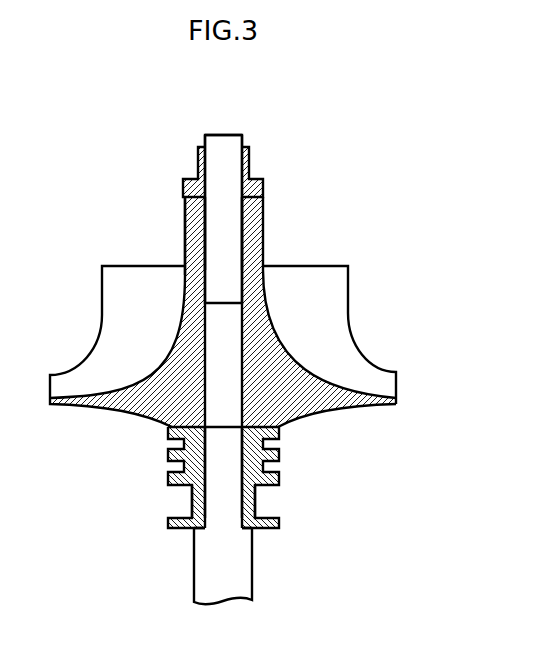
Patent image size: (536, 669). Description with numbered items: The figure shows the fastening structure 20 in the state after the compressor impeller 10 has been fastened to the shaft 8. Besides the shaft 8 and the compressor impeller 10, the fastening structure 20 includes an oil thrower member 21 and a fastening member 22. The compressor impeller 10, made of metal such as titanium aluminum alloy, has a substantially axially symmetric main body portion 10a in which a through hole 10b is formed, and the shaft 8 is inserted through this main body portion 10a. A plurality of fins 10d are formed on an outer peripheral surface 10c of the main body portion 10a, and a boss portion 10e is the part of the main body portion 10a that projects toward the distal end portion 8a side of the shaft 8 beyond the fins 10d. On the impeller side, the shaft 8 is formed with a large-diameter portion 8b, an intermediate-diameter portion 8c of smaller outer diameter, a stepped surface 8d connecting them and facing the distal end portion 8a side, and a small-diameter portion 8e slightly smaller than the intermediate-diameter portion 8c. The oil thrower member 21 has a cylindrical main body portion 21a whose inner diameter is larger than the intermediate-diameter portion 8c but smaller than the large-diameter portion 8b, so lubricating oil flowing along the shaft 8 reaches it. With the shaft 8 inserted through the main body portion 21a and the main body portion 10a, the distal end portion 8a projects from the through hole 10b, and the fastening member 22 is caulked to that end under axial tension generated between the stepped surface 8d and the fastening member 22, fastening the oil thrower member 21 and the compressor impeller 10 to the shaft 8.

The fastening structure 20 is at (23, 127).
The compressor impeller 10 is at (45, 302).
The main body portion 10a is at (316, 378).
The through hole 10b is at (200, 240).
The outer peripheral surface 10c is at (310, 372).
The fins 10d is at (350, 310).
The boss portion 10e is at (265, 255).
The fastening member 22 is at (197, 165).
The shaft 8 is at (185, 570).
The distal end portion 8a is at (247, 160).
The large-diameter portion 8b is at (253, 590).
The intermediate-diameter portion 8c is at (248, 440).
The stepped surface 8d is at (252, 526).
The small-diameter portion 8e is at (245, 223).
The oil thrower member 21 is at (120, 468).
The main body portion 21a is at (192, 497).